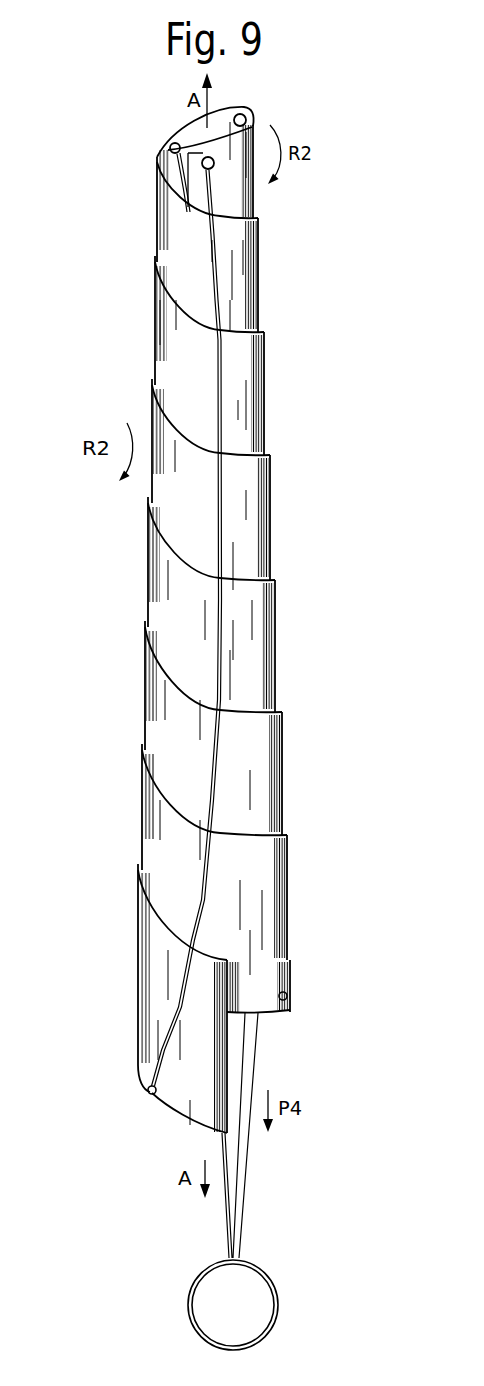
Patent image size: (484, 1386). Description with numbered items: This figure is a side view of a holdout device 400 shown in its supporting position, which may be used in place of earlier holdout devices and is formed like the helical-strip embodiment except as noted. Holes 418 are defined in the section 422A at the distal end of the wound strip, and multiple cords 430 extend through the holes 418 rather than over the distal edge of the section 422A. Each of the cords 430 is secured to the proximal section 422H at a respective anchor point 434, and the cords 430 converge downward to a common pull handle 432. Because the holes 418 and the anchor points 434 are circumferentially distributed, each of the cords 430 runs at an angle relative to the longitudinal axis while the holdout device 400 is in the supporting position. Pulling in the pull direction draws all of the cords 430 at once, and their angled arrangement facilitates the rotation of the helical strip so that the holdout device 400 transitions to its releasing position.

The holdout device 400 is at (194, 707).
The holes 418 is at (175, 141).
The section 422A is at (233, 193).
The proximal section 422H is at (155, 1017).
The cords 430 is at (178, 183).
The pull handle 432 is at (268, 1278).
The anchor points 434 is at (288, 999).